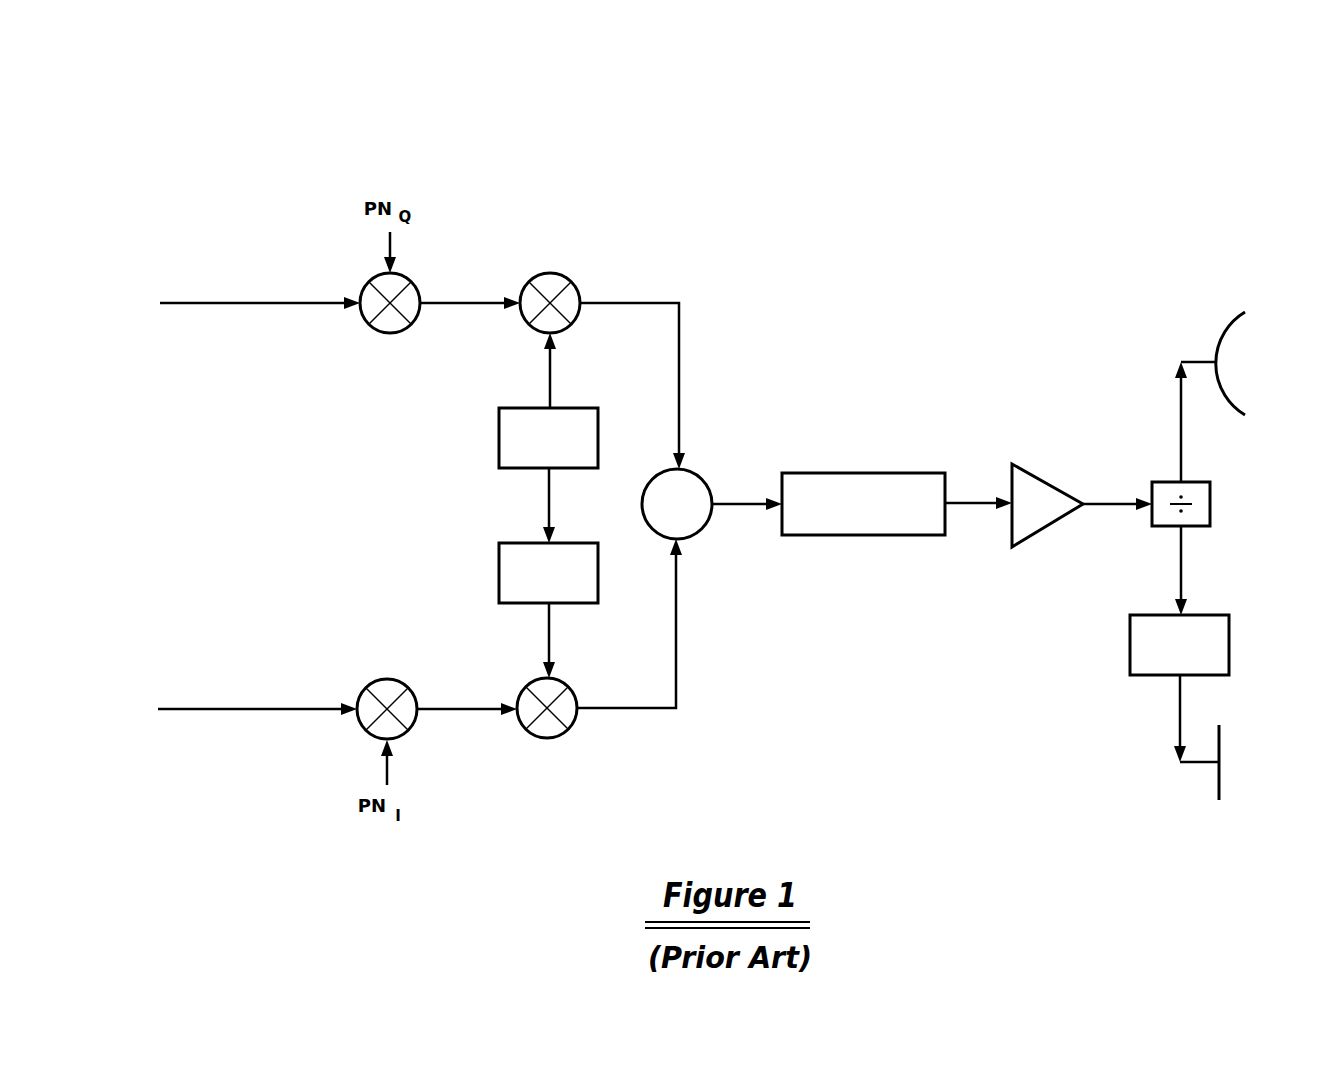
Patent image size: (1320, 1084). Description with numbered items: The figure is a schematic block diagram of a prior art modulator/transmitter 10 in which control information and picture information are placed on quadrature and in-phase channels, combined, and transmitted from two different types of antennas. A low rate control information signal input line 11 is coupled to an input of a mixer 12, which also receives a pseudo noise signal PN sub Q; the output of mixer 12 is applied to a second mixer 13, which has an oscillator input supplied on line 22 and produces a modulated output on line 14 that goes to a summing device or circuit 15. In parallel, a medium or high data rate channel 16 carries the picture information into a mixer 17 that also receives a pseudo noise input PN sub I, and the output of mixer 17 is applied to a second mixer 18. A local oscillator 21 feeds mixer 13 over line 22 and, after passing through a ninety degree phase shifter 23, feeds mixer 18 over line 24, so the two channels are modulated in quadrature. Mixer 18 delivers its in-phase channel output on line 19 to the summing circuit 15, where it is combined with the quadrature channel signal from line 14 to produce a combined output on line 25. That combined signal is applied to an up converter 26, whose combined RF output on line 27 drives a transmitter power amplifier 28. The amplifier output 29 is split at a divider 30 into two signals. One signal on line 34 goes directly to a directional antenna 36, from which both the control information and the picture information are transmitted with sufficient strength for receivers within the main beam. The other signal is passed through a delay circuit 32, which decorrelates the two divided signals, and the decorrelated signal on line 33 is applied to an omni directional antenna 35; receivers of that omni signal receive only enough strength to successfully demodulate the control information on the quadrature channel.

The prior art modulator/transmitter 10 is at (905, 227).
The control information signal input line 11 is at (325, 298).
The mixer 12 is at (415, 288).
The second mixer 13 is at (577, 290).
The line 14 is at (680, 333).
The summing device or circuit 15 is at (702, 478).
The medium or high data rate channel 16 is at (308, 707).
The mixer 17 is at (373, 738).
The second mixer 18 is at (571, 729).
The line 19 is at (680, 640).
The local oscillator 21 is at (499, 428).
The line 22 is at (552, 380).
The 90° phase shifter 23 is at (499, 565).
The line 24 is at (552, 637).
The line 25 is at (717, 503).
The up converter 26 is at (873, 473).
The line 27 is at (967, 502).
The transmitter power amplifier 28 is at (1044, 479).
The output 29 is at (1102, 503).
The divider 30 is at (1212, 500).
The delay circuit 32 is at (1230, 645).
The line 33 is at (1181, 705).
The line 34 is at (1183, 452).
The omni directional antenna 35 is at (1221, 745).
The directional antenna 36 is at (1226, 337).